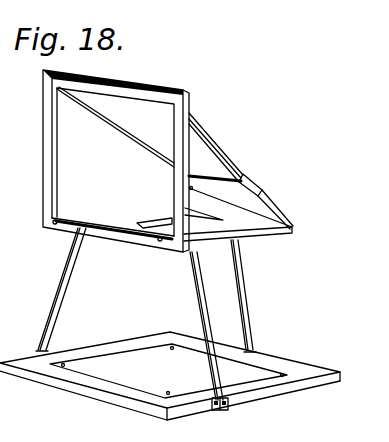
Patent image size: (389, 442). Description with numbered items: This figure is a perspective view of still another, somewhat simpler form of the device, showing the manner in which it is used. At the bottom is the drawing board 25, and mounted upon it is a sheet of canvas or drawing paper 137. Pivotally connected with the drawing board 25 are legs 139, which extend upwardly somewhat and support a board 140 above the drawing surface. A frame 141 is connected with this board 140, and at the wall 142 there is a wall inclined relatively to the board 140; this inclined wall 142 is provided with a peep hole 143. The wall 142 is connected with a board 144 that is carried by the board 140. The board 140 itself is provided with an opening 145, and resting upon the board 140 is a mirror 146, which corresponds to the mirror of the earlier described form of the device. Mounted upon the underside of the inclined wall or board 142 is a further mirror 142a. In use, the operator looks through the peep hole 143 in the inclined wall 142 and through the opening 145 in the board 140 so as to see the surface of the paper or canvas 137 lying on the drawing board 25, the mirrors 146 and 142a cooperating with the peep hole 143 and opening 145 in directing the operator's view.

The drawing board 25 is at (280, 365).
The sheet of canvas or drawing paper 137 is at (238, 367).
The legs 139 is at (62, 282).
The board 140 is at (220, 228).
The frame 141 is at (46, 161).
The wall 142 is at (207, 141).
The mirror 142a is at (205, 162).
The peep hole 143 is at (174, 137).
The board 144 is at (262, 195).
The opening 145 is at (158, 216).
The mirror 146 is at (142, 222).